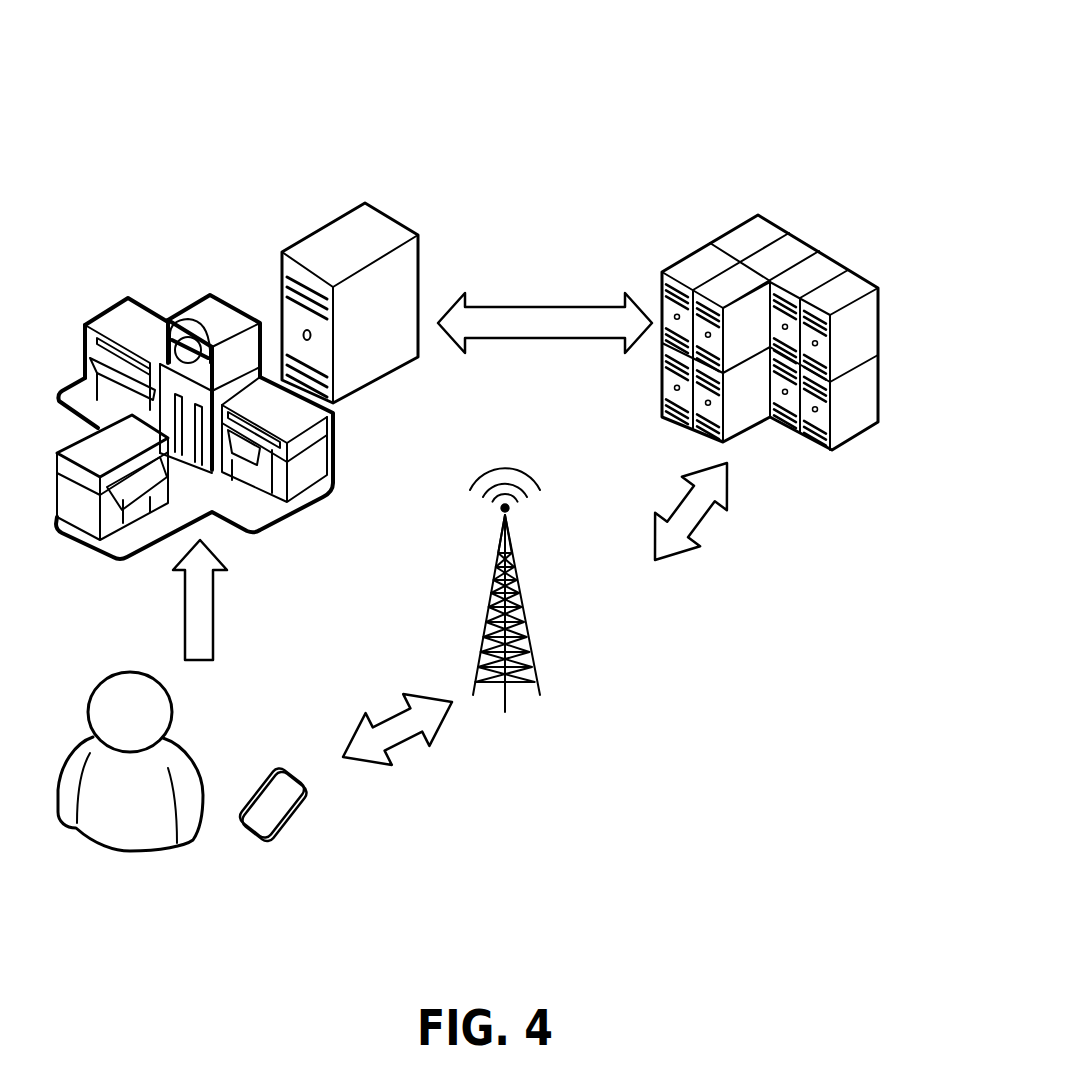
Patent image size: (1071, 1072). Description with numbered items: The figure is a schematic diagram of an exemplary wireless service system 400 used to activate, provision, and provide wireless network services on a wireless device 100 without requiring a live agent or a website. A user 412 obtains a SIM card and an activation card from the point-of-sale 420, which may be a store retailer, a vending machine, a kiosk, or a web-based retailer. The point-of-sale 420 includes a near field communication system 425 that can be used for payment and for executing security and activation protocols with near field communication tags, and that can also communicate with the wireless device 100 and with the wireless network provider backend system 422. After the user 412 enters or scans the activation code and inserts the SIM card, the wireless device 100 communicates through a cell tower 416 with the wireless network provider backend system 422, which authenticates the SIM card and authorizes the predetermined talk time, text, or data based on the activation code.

The wireless service system 400 is at (680, 846).
The point-of-sale 420 is at (196, 99).
The near field communication system 425 is at (313, 247).
The wireless network provider backend system 422 is at (883, 378).
The cell tower 416 is at (523, 588).
The user 412 is at (70, 750).
The wireless device 100 is at (267, 763).